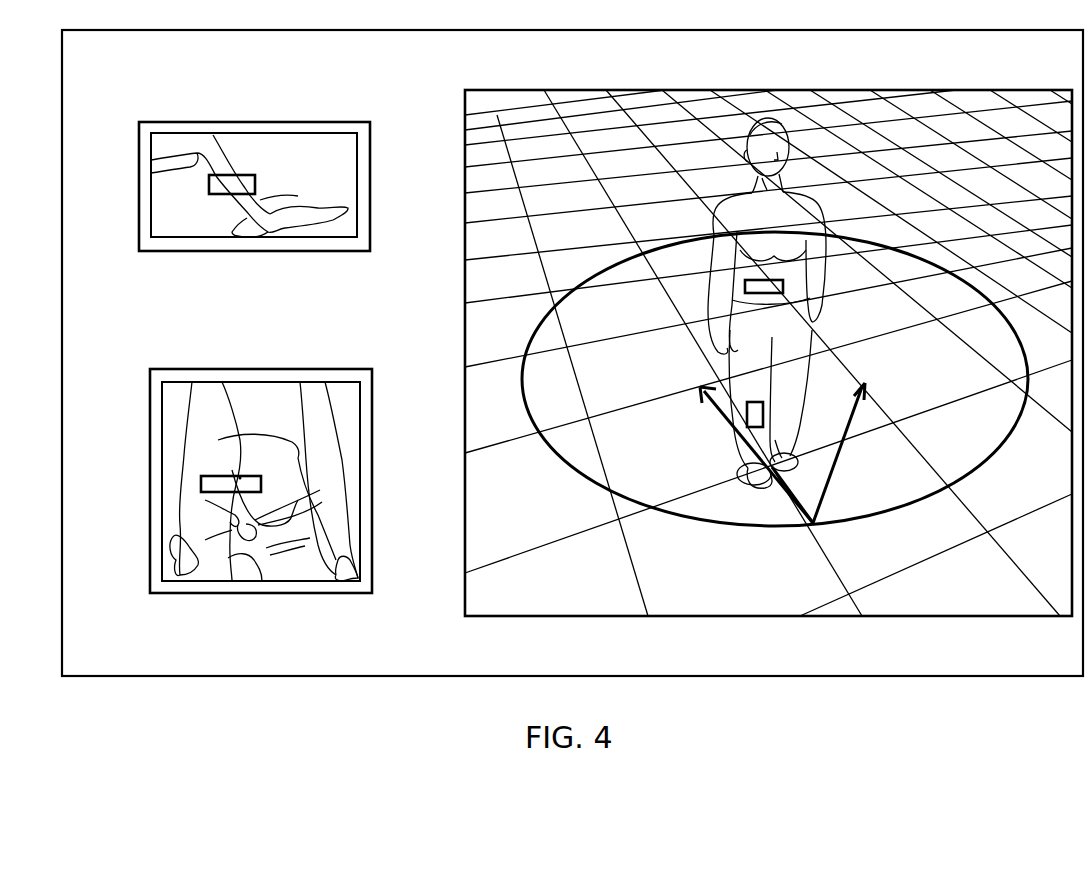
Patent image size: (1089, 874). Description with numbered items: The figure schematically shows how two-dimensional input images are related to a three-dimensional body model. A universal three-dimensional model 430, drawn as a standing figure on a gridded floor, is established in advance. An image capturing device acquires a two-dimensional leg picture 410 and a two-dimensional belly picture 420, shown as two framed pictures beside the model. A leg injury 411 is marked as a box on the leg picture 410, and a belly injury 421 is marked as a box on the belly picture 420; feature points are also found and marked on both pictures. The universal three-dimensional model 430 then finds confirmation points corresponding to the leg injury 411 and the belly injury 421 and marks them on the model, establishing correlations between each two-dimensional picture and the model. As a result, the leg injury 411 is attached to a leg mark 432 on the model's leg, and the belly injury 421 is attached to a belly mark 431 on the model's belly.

The 2D leg picture 410 is at (139, 140).
The leg injury 411 is at (255, 184).
The 2D belly picture 420 is at (150, 375).
The belly injury 421 is at (201, 480).
The universal 3D model 430 is at (777, 118).
The belly mark 431 is at (745, 284).
The leg mark 432 is at (747, 410).